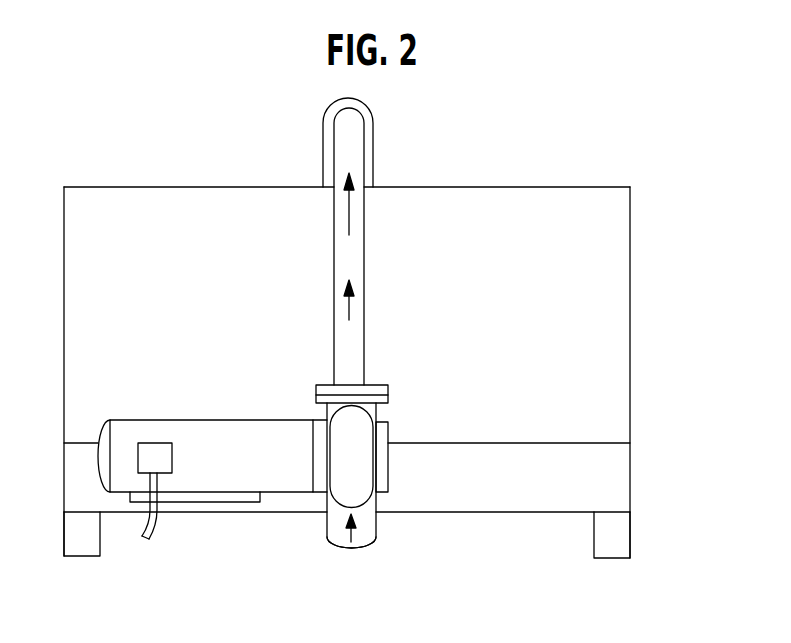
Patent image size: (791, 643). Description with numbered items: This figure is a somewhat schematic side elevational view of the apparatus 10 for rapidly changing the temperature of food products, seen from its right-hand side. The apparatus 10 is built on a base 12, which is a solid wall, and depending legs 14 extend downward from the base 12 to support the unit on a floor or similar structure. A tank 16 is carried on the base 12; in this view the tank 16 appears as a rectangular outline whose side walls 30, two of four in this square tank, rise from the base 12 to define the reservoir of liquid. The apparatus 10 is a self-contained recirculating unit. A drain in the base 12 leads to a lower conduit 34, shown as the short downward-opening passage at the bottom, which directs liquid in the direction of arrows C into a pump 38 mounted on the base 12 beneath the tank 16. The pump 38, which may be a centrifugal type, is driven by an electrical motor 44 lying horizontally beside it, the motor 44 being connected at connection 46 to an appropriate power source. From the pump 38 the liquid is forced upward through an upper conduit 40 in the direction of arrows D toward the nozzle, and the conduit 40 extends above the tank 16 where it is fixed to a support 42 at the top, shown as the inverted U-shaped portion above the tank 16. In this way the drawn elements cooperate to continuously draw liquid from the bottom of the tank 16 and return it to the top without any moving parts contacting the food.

The apparatus 10 is at (528, 156).
The base 12 is at (500, 515).
The legs 14 is at (85, 543).
The tank 16 is at (592, 188).
The side walls 30 is at (107, 212).
The lower conduit 34 is at (333, 540).
The pump 38 is at (391, 416).
The upper conduit 40 is at (353, 145).
The support 42 is at (353, 102).
The electrical motor 44 is at (212, 472).
The connection to power source 46 is at (152, 536).
The arrows C is at (355, 535).
The arrows D is at (350, 320).